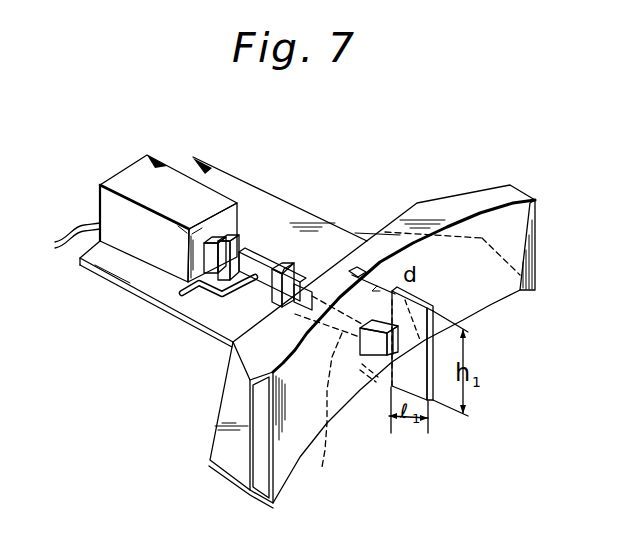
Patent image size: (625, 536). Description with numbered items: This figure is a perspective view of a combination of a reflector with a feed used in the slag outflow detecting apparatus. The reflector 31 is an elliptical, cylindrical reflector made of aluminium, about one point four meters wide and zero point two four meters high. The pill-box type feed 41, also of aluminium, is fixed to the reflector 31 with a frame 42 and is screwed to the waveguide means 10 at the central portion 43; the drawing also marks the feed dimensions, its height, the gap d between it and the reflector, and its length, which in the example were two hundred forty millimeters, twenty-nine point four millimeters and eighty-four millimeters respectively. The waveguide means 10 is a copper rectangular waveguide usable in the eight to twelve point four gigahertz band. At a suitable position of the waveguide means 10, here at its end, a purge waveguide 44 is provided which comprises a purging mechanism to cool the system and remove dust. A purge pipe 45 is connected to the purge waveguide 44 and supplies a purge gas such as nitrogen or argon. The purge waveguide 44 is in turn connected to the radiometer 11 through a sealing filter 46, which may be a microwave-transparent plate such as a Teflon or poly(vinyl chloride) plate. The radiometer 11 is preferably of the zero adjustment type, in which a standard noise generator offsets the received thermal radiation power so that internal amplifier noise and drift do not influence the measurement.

The waveguide means 10 is at (364, 332).
The radiometer 11 is at (158, 160).
The reflector 31 is at (537, 276).
The pill-box type feed 41 is at (412, 337).
The frame 42 is at (388, 370).
The central portion 43 is at (432, 373).
The purge waveguide 44 is at (265, 262).
The purge pipe 45 is at (208, 298).
The sealing filter 46 is at (242, 243).